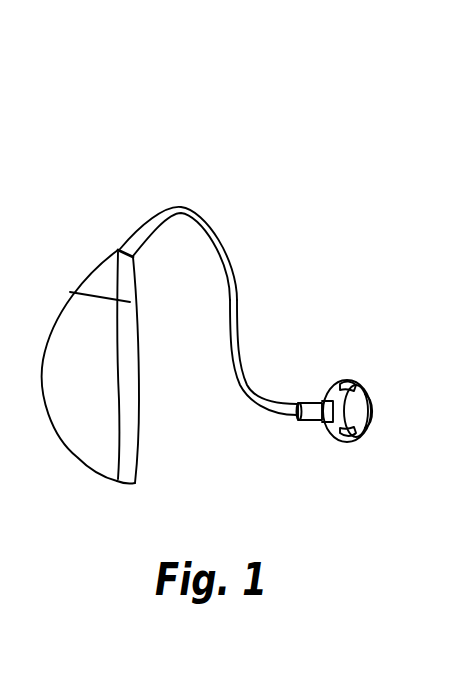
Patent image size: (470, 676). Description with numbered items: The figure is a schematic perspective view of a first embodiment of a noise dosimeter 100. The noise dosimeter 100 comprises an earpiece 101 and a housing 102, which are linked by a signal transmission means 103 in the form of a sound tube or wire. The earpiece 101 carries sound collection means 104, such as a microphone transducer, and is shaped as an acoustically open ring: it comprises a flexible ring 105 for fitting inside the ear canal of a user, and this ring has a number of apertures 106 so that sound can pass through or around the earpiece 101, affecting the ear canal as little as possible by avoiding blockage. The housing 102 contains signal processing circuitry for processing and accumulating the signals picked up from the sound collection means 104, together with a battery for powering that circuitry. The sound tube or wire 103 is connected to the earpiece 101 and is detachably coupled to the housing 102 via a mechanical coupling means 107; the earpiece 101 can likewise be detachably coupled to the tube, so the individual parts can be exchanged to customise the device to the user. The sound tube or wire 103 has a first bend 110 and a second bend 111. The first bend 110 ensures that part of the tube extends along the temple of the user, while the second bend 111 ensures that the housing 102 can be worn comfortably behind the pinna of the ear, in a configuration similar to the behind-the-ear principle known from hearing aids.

The noise dosimeter 100 is at (64, 179).
The earpiece 101 is at (367, 387).
The housing 102 is at (87, 447).
The signal transmission means 103 is at (235, 320).
The sound collection means 104 is at (330, 437).
The flexible ring 105 is at (370, 432).
The apertures 106 is at (352, 386).
The mechanical coupling means 107 is at (97, 283).
The first bend 110 is at (252, 389).
The second bend 111 is at (181, 210).